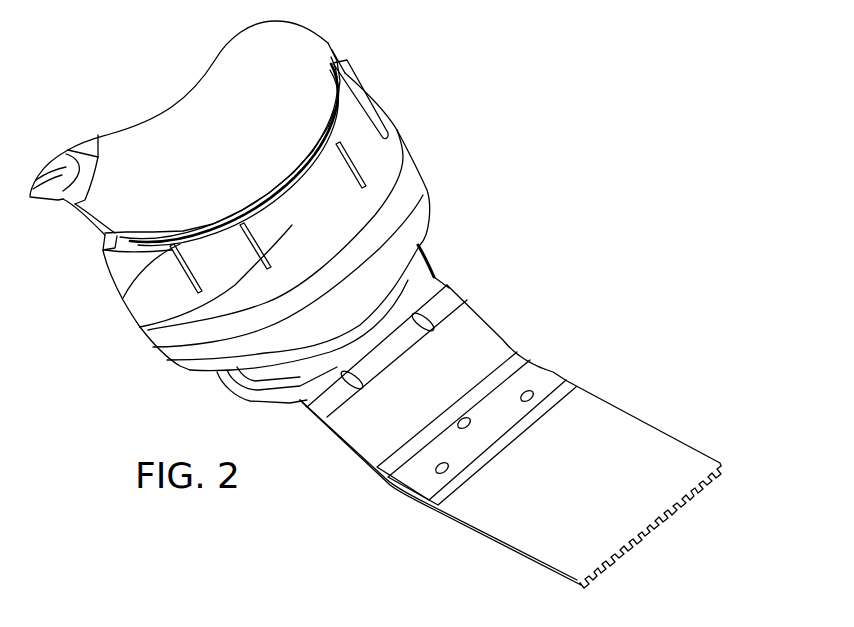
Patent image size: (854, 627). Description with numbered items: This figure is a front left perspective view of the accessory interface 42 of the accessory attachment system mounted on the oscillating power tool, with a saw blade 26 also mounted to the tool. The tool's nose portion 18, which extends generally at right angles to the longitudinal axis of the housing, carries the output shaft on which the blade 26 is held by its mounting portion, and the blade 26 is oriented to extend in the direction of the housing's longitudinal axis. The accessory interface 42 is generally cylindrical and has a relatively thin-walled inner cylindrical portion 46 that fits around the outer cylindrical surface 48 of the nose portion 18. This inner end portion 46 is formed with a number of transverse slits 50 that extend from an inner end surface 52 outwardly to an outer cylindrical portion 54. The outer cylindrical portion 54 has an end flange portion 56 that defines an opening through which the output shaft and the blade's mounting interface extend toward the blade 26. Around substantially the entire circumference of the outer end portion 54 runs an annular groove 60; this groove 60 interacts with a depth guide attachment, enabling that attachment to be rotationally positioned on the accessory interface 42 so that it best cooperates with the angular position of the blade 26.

The nose portion 18 is at (326, 32).
The saw blade 26 is at (497, 327).
The accessory interface 42 is at (457, 153).
The inner cylindrical portion 46 is at (367, 95).
The outer cylindrical surface 48 is at (140, 257).
The transverse slits 50 is at (345, 150).
The inner end surface 52 is at (122, 294).
The outer cylindrical portion 54 is at (168, 352).
The end flange portion 56 is at (192, 372).
The annular groove 60 is at (395, 208).